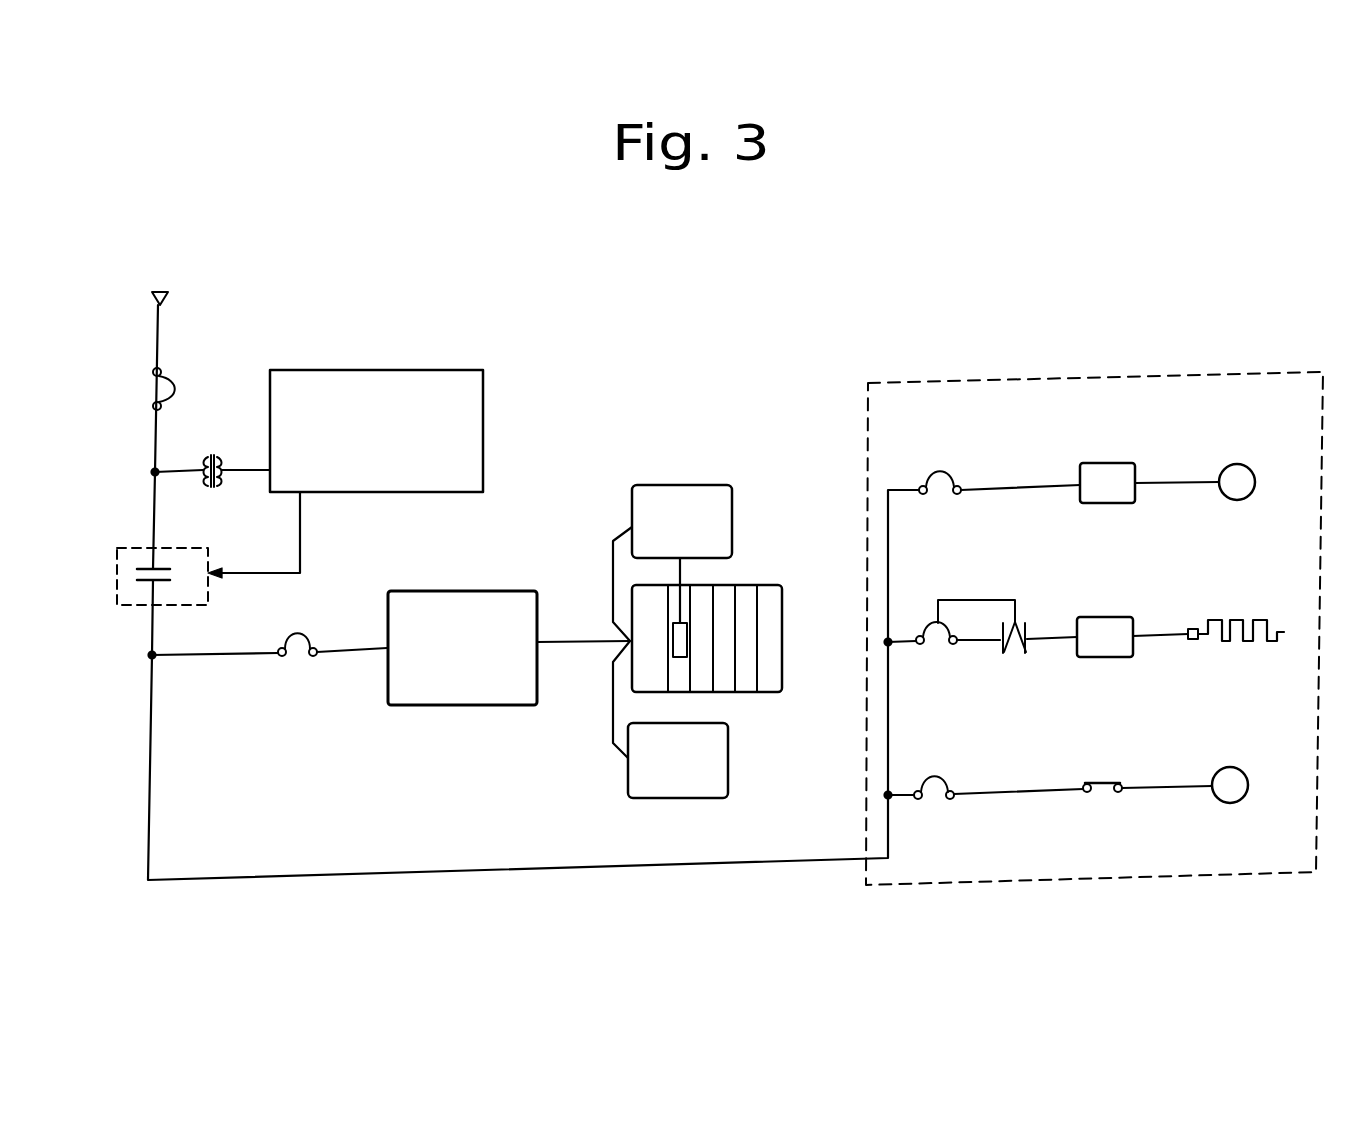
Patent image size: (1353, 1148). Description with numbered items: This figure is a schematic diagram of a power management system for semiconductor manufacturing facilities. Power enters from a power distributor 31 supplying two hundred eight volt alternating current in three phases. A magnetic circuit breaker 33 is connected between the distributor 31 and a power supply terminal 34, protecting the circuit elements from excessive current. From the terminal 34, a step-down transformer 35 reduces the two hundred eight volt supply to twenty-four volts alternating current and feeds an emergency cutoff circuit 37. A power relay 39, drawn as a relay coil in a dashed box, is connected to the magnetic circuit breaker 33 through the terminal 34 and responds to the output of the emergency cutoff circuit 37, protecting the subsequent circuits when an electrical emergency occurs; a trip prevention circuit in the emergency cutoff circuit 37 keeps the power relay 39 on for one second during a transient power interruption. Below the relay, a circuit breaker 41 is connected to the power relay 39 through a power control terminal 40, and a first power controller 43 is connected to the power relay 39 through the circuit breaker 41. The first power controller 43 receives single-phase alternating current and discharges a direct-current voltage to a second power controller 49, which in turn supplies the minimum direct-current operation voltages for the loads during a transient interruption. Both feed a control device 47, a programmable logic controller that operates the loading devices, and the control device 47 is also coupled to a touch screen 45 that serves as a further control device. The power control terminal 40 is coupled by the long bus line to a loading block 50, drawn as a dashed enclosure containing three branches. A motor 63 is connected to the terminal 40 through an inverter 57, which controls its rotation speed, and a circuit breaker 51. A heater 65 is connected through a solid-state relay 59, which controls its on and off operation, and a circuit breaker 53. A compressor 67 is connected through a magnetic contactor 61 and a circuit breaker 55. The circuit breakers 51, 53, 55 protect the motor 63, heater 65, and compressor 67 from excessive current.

The power distributor 31 is at (168, 297).
The magnetic circuit breaker 33 is at (173, 373).
The power supply terminal 34 is at (153, 472).
The step-down transformer 35 is at (212, 455).
The emergency cutoff circuit 37 is at (460, 367).
The power relay 39 is at (117, 575).
The power control terminal 40 is at (152, 655).
The circuit breaker 41 is at (298, 635).
The first power controller 43 is at (487, 589).
The touch screen 45 is at (733, 517).
The control device 47 is at (783, 668).
The second power controller 49 is at (729, 757).
The loading block 50 is at (1184, 372).
The circuit breaker 51 is at (940, 470).
The circuit breaker 53 is at (926, 622).
The circuit breaker 55 is at (935, 778).
The inverter 57 is at (1108, 463).
The solid-state relay 59 is at (1105, 617).
The magnetic contactor 61 is at (1104, 783).
The motor 63 is at (1240, 465).
The heater 65 is at (1250, 616).
The compressor 67 is at (1237, 767).